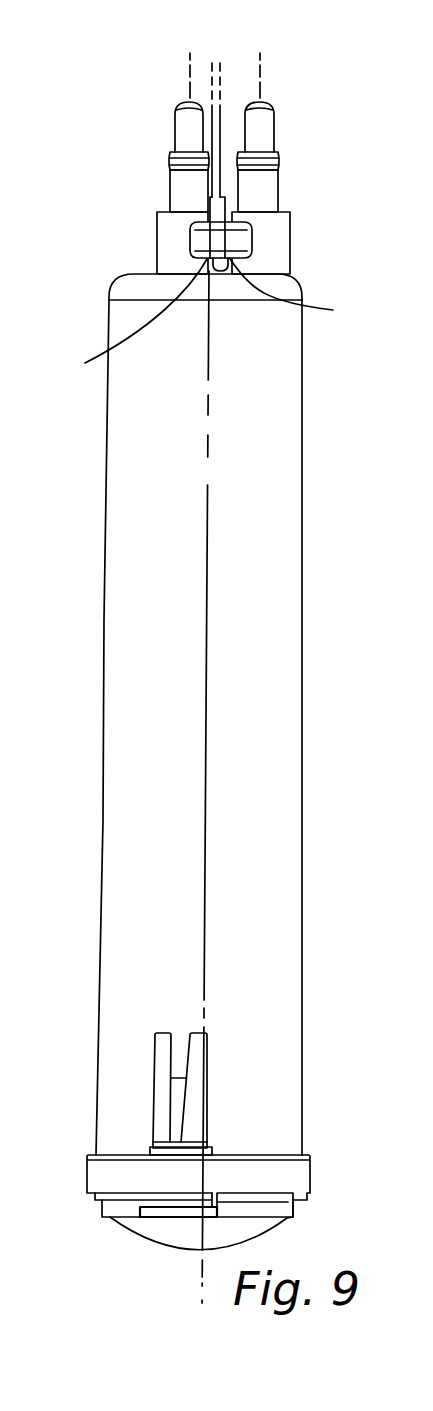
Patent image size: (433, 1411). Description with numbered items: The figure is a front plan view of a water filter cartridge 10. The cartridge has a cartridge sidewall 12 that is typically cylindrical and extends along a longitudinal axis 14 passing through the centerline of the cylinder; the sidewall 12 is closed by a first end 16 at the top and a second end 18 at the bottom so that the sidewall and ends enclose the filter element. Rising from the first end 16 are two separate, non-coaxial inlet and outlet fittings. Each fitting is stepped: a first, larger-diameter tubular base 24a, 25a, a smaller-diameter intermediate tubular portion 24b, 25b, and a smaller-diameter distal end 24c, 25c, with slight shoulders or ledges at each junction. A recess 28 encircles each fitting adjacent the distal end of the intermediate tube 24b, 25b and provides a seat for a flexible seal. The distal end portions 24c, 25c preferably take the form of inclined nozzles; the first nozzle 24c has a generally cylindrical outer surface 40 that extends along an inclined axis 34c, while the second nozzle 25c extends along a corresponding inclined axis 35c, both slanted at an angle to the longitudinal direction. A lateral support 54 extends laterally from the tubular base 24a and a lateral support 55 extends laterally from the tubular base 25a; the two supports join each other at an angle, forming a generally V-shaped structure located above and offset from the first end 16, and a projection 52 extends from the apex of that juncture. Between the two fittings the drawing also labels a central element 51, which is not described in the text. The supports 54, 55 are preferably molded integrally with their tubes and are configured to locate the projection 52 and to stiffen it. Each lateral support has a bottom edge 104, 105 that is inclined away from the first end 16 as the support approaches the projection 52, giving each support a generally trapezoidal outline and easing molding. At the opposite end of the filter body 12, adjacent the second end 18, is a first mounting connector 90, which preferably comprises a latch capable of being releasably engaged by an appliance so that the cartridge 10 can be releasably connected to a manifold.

The water filter cartridge 10 is at (342, 807).
The cartridge sidewall 12 is at (285, 651).
The longitudinal axis 14 is at (217, 63).
The first end 16 is at (134, 272).
The second end 18 is at (267, 1225).
The tubular base 24a is at (285, 265).
The intermediate tubular portion 24b is at (280, 178).
The distal end 24c is at (270, 132).
The tubular base 25a is at (157, 258).
The intermediate tubular portion 25b is at (168, 175).
The distal end 25c is at (175, 120).
The recess 28 is at (280, 162).
The inclined axis 34c is at (267, 78).
The inclined axis 35c is at (183, 70).
The outer surface 40 is at (267, 105).
The central post 51 is at (219, 65).
The projection 52 is at (217, 210).
The lateral support 54 is at (237, 240).
The lateral support 55 is at (203, 243).
The first mounting connector 90 is at (165, 1062).
The bottom edge 104 is at (308, 292).
The bottom edge 105 is at (122, 320).